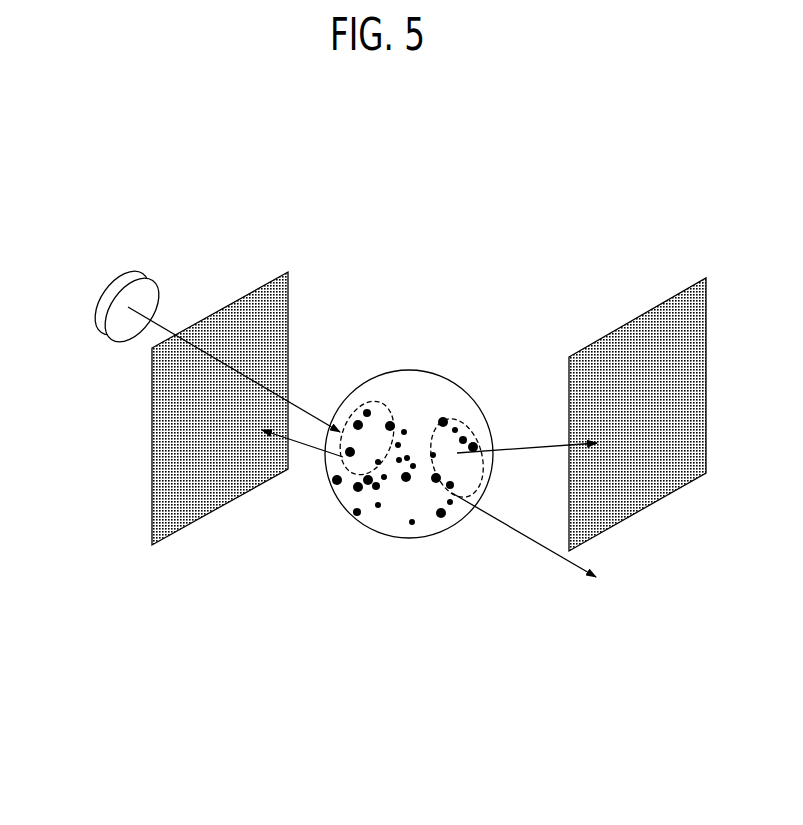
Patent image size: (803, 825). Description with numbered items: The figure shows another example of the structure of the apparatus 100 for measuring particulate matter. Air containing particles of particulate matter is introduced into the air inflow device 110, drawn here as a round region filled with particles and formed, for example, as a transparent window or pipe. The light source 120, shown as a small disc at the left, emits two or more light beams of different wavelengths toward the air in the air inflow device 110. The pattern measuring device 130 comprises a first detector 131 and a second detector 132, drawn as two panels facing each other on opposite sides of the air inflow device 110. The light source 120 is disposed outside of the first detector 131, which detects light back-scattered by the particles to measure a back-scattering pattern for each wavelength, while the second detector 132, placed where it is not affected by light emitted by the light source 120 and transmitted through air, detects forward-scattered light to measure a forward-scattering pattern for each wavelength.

The apparatus for measuring particulate matter 100 is at (534, 255).
The air inflow device 110 is at (452, 383).
The light source 120 is at (103, 285).
The pattern measuring device 130 is at (457, 686).
The first detector 131 is at (243, 493).
The second detector 132 is at (568, 522).